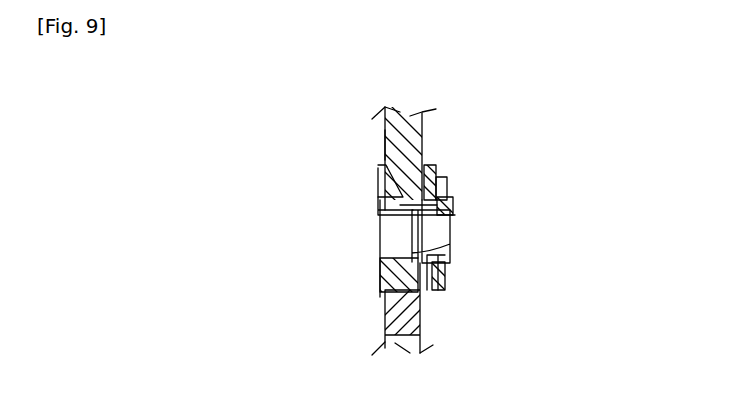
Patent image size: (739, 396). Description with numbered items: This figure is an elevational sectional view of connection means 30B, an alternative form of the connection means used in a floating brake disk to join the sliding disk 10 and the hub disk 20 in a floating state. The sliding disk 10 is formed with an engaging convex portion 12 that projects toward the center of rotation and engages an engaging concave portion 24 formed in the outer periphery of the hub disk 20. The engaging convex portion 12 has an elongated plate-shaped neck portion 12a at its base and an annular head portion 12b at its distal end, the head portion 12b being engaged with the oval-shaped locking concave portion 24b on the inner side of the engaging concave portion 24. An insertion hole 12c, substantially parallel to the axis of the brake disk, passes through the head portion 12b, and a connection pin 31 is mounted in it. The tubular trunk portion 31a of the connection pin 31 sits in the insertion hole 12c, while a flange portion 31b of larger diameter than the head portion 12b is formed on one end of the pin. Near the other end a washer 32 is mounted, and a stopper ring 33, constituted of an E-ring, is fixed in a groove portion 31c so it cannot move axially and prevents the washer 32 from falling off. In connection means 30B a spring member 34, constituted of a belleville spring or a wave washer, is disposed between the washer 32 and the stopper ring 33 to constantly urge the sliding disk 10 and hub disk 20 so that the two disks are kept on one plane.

The sliding disk 10 is at (438, 130).
The engaging convex portion 12 is at (423, 150).
The neck portion 12a is at (387, 142).
The head portion 12b is at (430, 284).
The insertion hole 12c is at (453, 208).
The hub disk 20 is at (431, 326).
The engaging concave portion 24 is at (453, 243).
The locking concave portion 24b is at (383, 276).
The connection means 30B is at (480, 173).
The connection pin 31 is at (383, 198).
The trunk portion 31a is at (383, 170).
The flange portion 31b is at (380, 183).
The groove portion 31c is at (445, 276).
The washer 32 is at (428, 171).
The stopper ring 33 is at (447, 186).
The spring member 34 is at (438, 283).